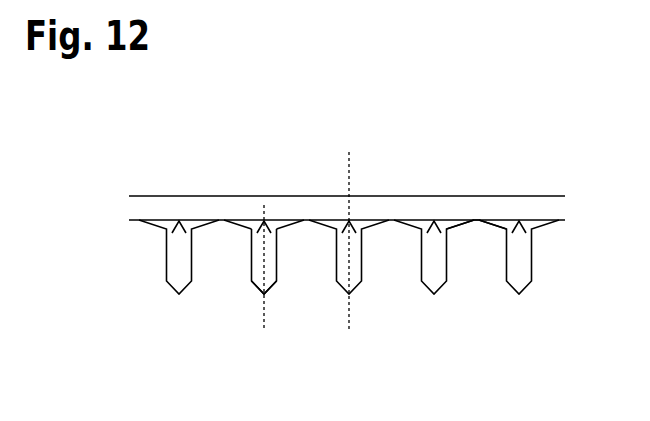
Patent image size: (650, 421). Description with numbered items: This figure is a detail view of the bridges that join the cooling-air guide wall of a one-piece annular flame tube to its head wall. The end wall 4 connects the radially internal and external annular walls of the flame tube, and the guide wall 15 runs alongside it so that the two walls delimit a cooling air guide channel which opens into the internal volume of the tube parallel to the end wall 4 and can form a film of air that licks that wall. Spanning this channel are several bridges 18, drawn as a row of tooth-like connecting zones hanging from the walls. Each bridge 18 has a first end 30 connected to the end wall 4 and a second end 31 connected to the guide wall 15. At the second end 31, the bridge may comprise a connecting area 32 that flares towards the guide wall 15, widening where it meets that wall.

The end wall 4 is at (468, 267).
The guide wall 15 is at (300, 210).
The bridge 18 is at (274, 258).
The first end 30 is at (262, 289).
The second end 31 is at (252, 231).
The connecting area 32 is at (251, 231).